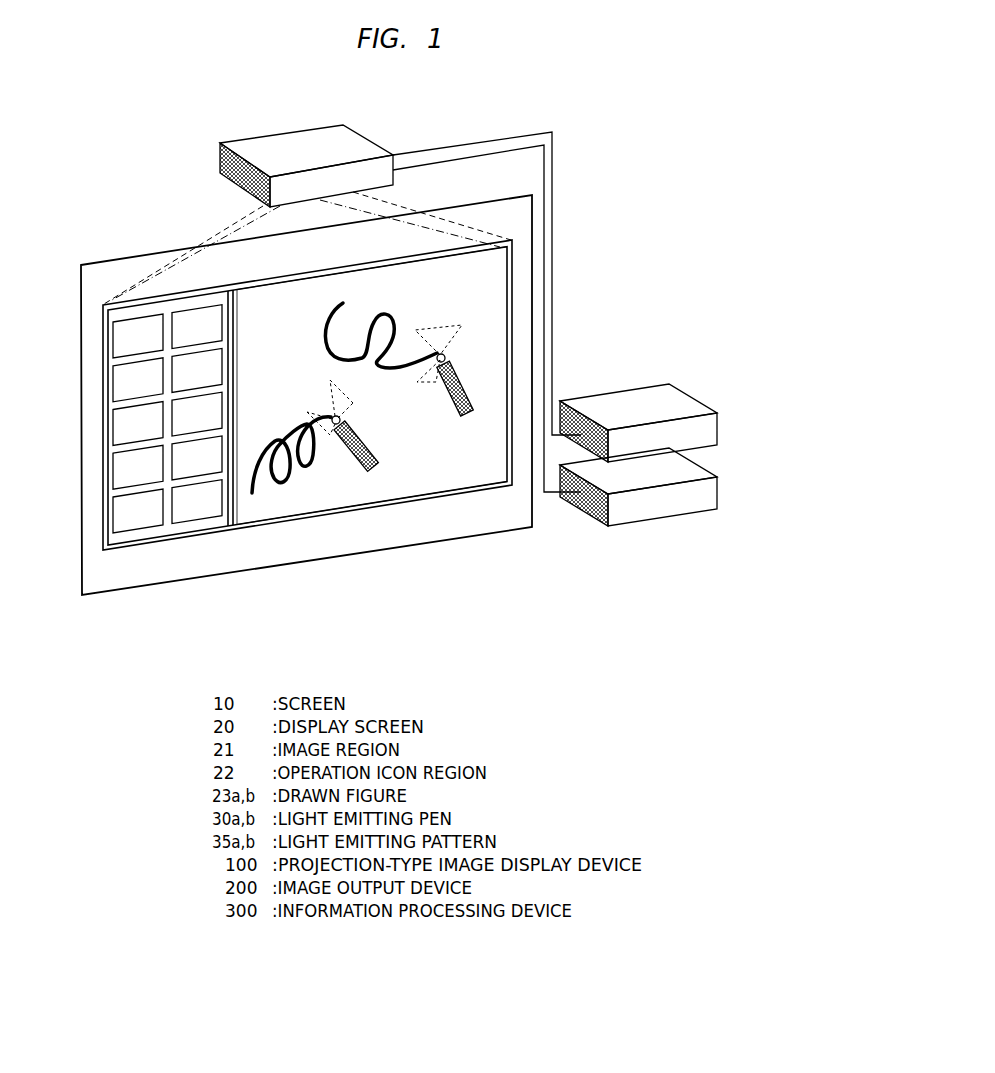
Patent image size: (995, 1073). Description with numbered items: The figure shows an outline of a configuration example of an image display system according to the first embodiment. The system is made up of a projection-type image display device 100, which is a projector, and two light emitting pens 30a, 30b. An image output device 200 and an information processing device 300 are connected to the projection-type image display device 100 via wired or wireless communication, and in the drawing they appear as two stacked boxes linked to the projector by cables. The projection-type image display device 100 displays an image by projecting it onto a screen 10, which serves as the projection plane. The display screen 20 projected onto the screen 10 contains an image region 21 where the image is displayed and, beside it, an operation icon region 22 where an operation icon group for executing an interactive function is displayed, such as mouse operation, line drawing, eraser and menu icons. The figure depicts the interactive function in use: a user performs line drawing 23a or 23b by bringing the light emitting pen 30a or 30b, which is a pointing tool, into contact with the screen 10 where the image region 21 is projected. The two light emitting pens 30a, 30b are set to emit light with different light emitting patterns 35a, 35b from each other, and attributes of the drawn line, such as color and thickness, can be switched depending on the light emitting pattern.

The screen 10 is at (117, 258).
The display screen 20 is at (235, 530).
The image region 21 is at (498, 270).
The operation icon region 22 is at (135, 522).
The line drawing 23a is at (327, 327).
The line drawing 23b is at (263, 437).
The light emitting pen 30a is at (452, 413).
The light emitting pen 30b is at (352, 452).
The light emitting pattern 35a is at (443, 323).
The light emitting pattern 35b is at (317, 395).
The projection-type image display device 100 is at (288, 131).
The image output device 200 is at (647, 522).
The information processing device 300 is at (645, 388).